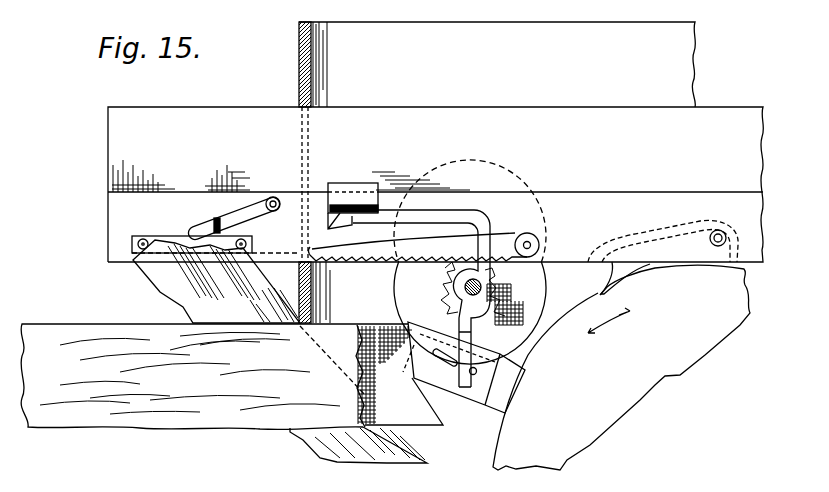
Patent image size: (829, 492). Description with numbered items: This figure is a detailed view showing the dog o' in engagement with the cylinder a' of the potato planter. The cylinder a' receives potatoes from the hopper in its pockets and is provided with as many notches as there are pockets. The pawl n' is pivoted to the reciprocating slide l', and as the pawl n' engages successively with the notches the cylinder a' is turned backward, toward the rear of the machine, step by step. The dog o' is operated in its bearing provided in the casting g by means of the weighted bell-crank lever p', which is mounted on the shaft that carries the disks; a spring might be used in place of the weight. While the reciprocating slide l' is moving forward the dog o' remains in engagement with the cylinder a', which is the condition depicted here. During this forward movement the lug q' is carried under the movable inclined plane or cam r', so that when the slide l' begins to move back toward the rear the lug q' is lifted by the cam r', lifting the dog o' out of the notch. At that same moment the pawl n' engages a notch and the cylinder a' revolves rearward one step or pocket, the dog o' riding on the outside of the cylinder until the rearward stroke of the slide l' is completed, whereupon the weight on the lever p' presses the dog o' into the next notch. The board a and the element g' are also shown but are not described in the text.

The lug q' is at (478, 172).
The reciprocating slide l' is at (435, 184).
The movable inclined plane or cam r' is at (216, 224).
The stop block g' is at (325, 217).
The weighted bell-crank lever p' is at (438, 273).
The pawl n' is at (658, 257).
The cylinder a' is at (621, 367).
The board a is at (232, 351).
The casting g is at (395, 404).
The dog o' is at (474, 367).